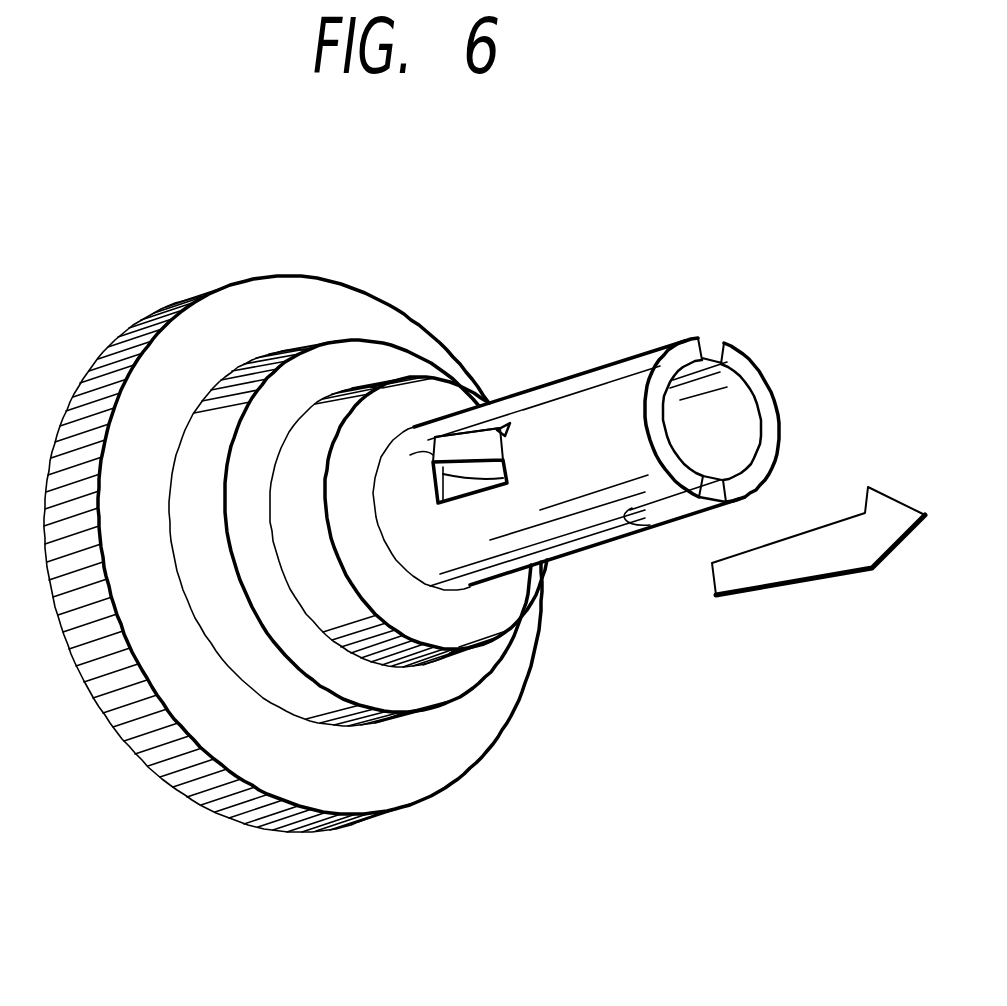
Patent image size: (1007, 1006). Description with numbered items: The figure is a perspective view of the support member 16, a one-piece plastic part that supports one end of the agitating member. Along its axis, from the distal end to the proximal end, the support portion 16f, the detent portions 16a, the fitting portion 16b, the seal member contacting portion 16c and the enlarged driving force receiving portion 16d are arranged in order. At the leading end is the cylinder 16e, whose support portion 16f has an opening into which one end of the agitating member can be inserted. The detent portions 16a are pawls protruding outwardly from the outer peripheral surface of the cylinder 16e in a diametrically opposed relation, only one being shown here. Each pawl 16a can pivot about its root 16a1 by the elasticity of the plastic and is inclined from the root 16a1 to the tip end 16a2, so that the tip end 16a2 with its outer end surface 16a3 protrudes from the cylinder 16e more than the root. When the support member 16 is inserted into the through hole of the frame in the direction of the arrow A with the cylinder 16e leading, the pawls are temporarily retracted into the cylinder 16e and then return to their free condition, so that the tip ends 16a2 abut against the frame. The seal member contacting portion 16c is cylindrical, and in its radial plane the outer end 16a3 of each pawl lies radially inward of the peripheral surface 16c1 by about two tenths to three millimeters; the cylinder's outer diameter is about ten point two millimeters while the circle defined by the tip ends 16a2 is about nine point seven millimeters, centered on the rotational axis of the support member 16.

The support member 16 is at (262, 277).
The enlarged driving force receiving portion 16d is at (130, 327).
The seal member contacting portion 16c is at (297, 443).
The peripheral surface 16c1 is at (393, 645).
The fitting portion 16b is at (398, 455).
The detent portion 16a is at (470, 443).
The root 16a1 is at (503, 447).
The tip end 16a2 is at (410, 457).
The outer end surface 16a3 is at (442, 443).
The cylinder 16e is at (583, 512).
The support portion 16f is at (727, 403).
The arrow A is at (792, 558).